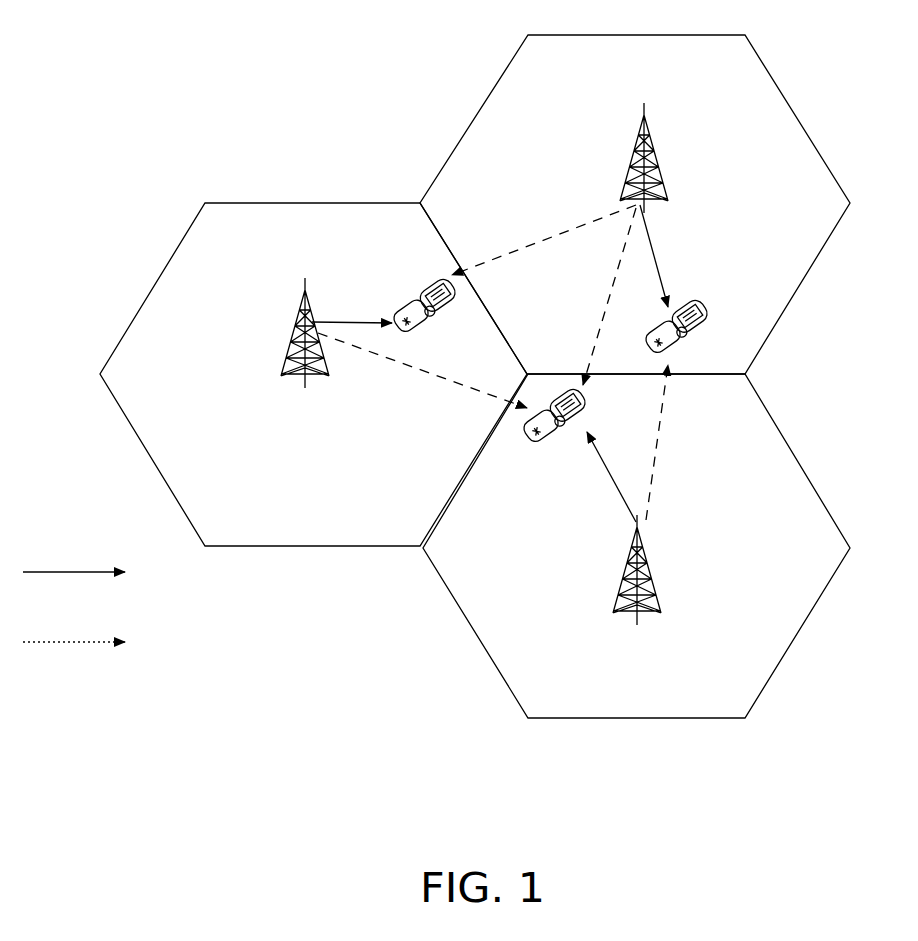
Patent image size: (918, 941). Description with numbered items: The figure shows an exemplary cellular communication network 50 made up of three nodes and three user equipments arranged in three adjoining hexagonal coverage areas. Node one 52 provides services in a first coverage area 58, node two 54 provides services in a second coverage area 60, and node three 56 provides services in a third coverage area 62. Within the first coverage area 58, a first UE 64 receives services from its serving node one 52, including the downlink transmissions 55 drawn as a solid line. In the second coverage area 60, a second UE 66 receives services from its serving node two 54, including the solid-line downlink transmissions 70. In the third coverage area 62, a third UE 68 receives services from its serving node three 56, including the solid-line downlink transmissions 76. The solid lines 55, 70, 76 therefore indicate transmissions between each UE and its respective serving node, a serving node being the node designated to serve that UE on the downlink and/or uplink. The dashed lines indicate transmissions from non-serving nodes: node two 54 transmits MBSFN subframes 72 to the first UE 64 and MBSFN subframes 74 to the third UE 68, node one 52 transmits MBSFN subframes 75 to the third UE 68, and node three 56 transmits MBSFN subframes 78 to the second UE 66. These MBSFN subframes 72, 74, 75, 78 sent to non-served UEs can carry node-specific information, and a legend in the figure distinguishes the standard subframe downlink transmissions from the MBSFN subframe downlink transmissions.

The cellular communication network 50 is at (226, 62).
The node one 52 is at (297, 322).
The node two 54 is at (648, 128).
The MBSFN subframe downlink transmissions 55 is at (347, 320).
The node three 56 is at (647, 562).
The first coverage area 58 is at (332, 212).
The second coverage area 60 is at (778, 108).
The third coverage area 62 is at (773, 662).
The first UE 64 is at (418, 292).
The second UE 66 is at (700, 298).
The third UE 68 is at (550, 447).
The MBSFN subframe DL transmissions 70 is at (651, 243).
The MBSFN subframe transmissions 72 is at (553, 236).
The MBSFN subframe transmissions 74 is at (605, 305).
The MBSFN subframes 75 is at (460, 382).
The MBSFN subframe DL transmissions 76 is at (613, 495).
The MBSFN subframe transmissions 78 is at (653, 462).